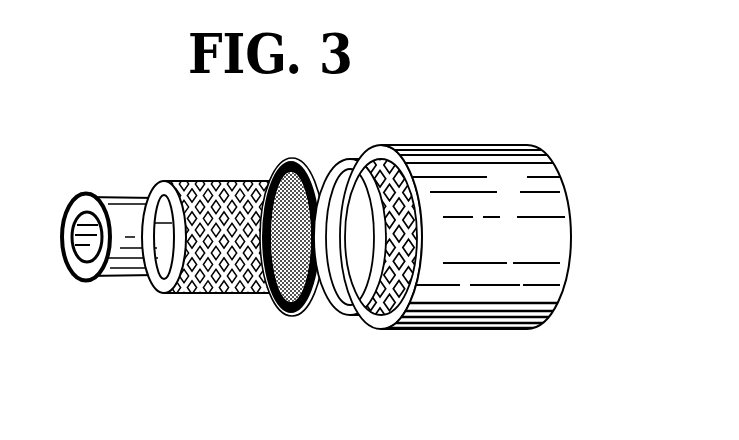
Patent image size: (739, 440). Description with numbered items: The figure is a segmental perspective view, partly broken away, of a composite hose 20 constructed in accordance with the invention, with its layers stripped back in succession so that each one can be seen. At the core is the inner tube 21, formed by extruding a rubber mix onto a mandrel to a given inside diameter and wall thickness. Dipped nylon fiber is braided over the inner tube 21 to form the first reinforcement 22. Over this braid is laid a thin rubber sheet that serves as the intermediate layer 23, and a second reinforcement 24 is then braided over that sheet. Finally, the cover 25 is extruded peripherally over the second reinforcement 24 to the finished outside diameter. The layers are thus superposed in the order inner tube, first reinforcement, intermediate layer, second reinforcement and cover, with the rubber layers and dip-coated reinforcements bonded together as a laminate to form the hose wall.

The coaxial cable 20 is at (318, 243).
The inner tube 21 is at (120, 282).
The first reinforcement 22 is at (201, 288).
The intermediate layer 23 is at (270, 304).
The second reinforcement 24 is at (325, 318).
The cover 25 is at (447, 329).